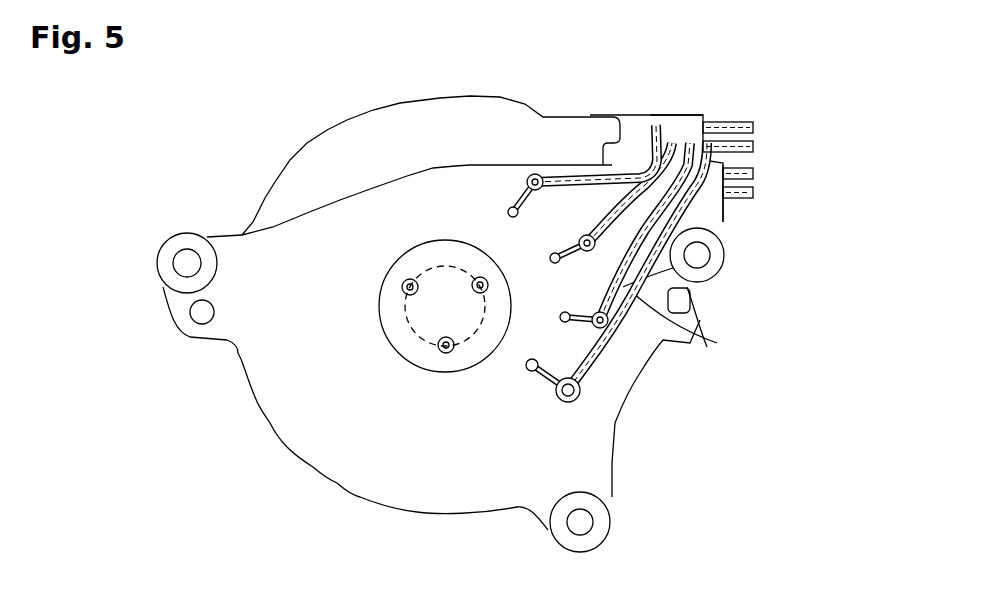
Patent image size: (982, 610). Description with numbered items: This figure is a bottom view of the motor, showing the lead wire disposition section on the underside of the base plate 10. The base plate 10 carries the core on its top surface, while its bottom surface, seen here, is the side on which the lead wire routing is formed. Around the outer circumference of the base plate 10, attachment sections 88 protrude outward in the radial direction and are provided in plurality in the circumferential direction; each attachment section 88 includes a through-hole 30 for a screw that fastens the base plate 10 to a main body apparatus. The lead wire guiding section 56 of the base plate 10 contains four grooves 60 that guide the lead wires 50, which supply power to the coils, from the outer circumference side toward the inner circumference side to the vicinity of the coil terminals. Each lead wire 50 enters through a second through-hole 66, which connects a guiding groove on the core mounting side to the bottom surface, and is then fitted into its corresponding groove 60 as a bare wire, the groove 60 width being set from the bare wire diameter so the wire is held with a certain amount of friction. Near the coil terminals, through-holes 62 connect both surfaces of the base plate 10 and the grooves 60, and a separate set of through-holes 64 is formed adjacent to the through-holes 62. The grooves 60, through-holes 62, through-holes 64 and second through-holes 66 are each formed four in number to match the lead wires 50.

The base plate 10 is at (320, 452).
The through-hole 30 is at (186, 258).
The attachment section 88 is at (165, 268).
The groove 60 is at (668, 296).
The through-hole 62 is at (585, 240).
The through-hole 64 is at (552, 258).
The second through-hole 66 is at (690, 150).
The lead wire 50 is at (756, 193).
The lead wire guiding section 56 is at (738, 215).